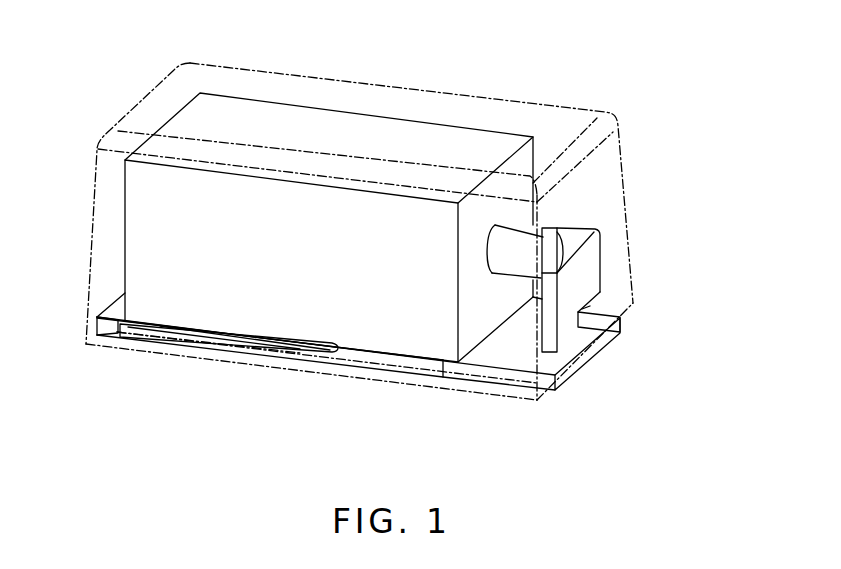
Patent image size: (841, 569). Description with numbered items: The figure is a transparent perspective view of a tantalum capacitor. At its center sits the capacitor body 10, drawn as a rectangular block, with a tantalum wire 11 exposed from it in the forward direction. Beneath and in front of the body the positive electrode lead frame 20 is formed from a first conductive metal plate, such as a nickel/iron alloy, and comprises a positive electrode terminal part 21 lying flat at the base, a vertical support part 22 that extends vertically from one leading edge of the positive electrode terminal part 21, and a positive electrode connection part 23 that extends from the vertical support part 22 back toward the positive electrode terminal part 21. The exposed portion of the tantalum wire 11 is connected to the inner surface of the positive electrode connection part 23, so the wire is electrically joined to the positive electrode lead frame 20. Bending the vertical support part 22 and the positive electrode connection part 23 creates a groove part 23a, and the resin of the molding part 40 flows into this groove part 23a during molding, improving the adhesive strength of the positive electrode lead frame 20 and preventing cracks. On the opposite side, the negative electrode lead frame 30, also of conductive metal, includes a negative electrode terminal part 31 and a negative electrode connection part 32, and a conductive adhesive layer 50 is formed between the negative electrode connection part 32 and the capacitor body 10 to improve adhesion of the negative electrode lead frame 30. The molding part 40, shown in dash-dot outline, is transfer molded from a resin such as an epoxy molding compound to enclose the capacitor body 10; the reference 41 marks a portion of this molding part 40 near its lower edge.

The capacitor body 10 is at (346, 118).
The tantalum wire 11 is at (543, 237).
The positive electrode lead frame 20 is at (395, 390).
The positive electrode terminal part 21 is at (497, 360).
The vertical support part 22 is at (577, 228).
The positive electrode connection part 23 is at (567, 327).
The groove part 23a is at (585, 310).
The negative electrode lead frame 30 is at (242, 386).
The negative electrode terminal part 31 is at (100, 333).
The negative electrode connection part 32 is at (298, 352).
The molding part 40 is at (454, 100).
The cover lower edge 41 is at (225, 356).
The conductive adhesive layer 50 is at (253, 340).